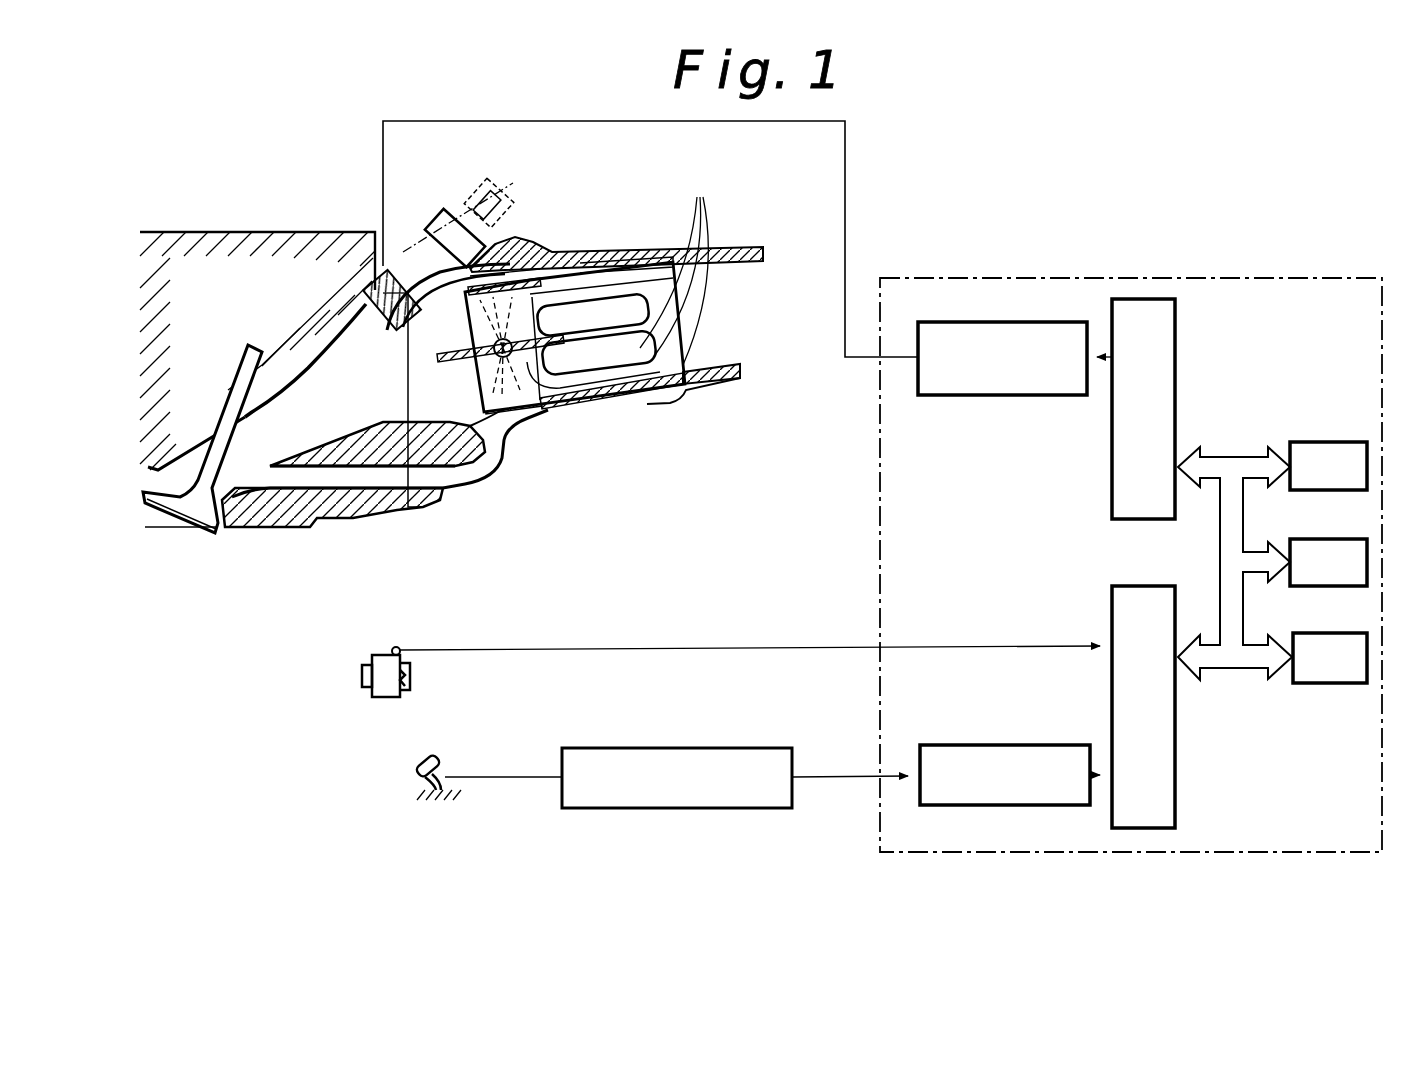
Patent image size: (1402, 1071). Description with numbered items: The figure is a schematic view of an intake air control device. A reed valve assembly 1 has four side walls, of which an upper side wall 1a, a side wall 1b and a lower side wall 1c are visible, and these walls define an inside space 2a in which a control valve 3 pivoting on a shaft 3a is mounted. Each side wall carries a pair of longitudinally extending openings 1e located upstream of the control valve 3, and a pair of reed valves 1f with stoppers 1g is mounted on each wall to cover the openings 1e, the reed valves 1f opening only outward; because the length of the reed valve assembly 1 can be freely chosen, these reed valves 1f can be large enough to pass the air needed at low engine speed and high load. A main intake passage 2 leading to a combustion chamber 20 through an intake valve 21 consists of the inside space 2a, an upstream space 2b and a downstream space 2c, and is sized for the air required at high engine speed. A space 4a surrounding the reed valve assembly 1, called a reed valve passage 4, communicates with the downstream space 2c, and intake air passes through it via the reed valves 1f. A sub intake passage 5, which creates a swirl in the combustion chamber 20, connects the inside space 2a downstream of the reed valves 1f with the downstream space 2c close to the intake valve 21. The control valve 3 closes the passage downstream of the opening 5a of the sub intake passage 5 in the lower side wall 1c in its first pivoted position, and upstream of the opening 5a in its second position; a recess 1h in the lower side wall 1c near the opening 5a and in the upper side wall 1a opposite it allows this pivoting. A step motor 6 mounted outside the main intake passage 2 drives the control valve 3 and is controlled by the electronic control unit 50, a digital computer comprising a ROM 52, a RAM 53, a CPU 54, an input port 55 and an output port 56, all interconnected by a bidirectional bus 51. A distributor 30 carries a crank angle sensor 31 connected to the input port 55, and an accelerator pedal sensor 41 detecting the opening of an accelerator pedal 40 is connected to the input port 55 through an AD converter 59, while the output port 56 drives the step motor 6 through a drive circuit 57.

The reed valve assembly 1 is at (540, 292).
The upper side wall 1a is at (503, 265).
The side wall 1b is at (437, 292).
The lower side wall 1c is at (562, 447).
The openings 1e is at (702, 198).
The reed valves 1f is at (578, 280).
The stoppers 1g is at (605, 265).
The recess 1h is at (458, 277).
The main intake passage 2 is at (330, 340).
The inside space 2a is at (593, 432).
The upstream space 2b is at (730, 278).
The downstream space 2c is at (307, 413).
The control valve 3 is at (350, 470).
The shaft 3a is at (463, 470).
The reed valve passage 4 is at (452, 216).
The space 4a is at (510, 283).
The sub intake passage 5 is at (473, 477).
The opening 5a is at (518, 462).
The step motor 6 is at (397, 445).
The combustion chamber 20 is at (147, 518).
The intake valve 21 is at (193, 500).
The distributor 30 is at (386, 698).
The crank angle sensor 31 is at (398, 650).
The accelerator pedal 40 is at (445, 770).
The accelerator pedal sensor 41 is at (720, 748).
The electronic control unit 50 is at (1172, 278).
The bidirectional bus 51 is at (1228, 457).
The ROM 52 is at (1335, 442).
The RAM 53 is at (1320, 539).
The CPU 54 is at (1325, 633).
The input port 55 is at (1178, 770).
The output port 56 is at (1178, 318).
The drive circuit 57 is at (1000, 322).
The AD converter 59 is at (1015, 745).